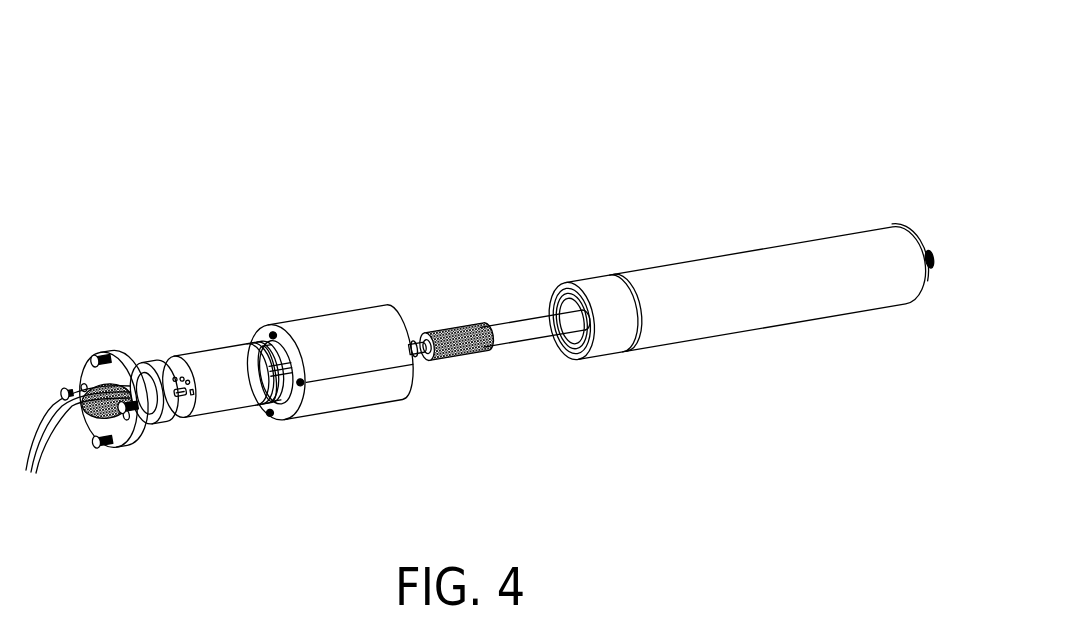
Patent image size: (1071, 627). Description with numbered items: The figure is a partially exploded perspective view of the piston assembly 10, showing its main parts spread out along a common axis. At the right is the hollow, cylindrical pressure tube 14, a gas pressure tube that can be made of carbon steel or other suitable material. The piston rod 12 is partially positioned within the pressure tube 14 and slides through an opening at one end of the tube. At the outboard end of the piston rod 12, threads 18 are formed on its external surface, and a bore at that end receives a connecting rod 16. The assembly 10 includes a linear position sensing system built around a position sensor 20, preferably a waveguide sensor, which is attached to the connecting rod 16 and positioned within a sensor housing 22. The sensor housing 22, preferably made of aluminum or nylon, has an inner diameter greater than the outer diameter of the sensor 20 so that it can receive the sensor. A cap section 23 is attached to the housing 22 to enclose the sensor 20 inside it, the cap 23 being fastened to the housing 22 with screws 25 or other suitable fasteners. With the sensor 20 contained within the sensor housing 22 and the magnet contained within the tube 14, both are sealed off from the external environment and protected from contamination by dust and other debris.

The piston assembly 10 is at (284, 92).
The piston rod 12 is at (530, 330).
The pressure tube 14 is at (737, 280).
The connecting rod 16 is at (411, 340).
The threads 18 is at (445, 330).
The position sensor 20 is at (220, 360).
The sensor housing 22 is at (340, 348).
The cap section 23 is at (130, 430).
The screws 25 is at (93, 357).